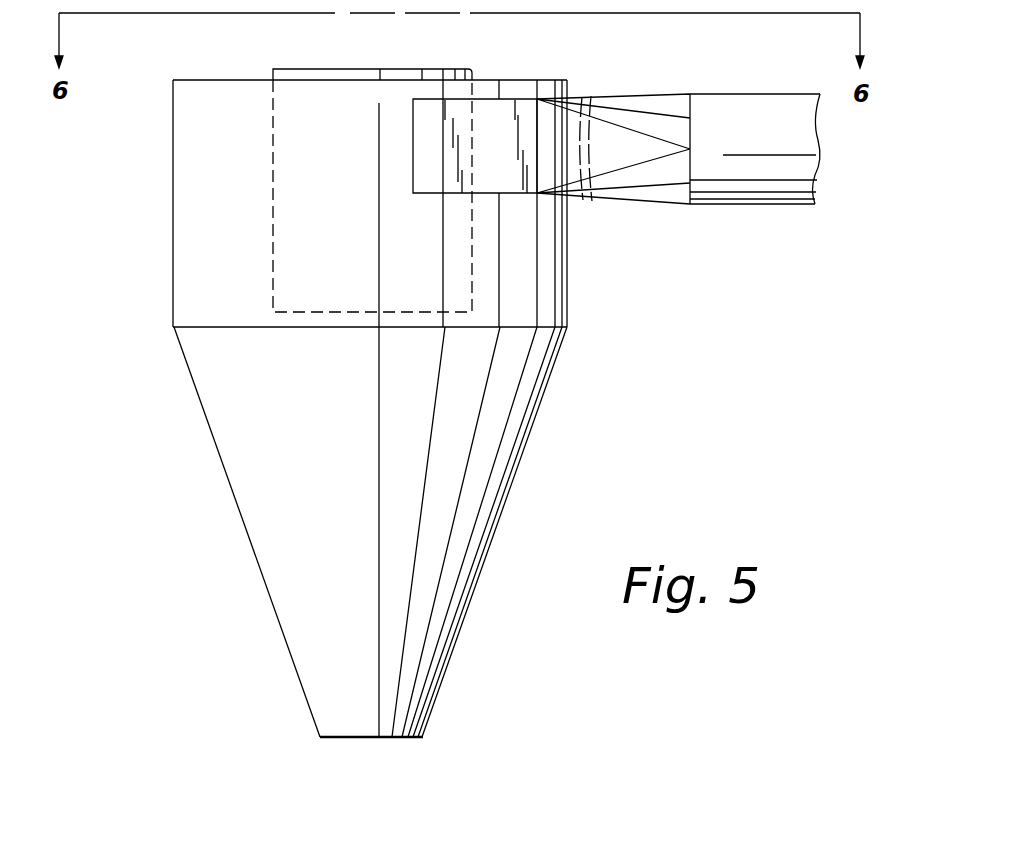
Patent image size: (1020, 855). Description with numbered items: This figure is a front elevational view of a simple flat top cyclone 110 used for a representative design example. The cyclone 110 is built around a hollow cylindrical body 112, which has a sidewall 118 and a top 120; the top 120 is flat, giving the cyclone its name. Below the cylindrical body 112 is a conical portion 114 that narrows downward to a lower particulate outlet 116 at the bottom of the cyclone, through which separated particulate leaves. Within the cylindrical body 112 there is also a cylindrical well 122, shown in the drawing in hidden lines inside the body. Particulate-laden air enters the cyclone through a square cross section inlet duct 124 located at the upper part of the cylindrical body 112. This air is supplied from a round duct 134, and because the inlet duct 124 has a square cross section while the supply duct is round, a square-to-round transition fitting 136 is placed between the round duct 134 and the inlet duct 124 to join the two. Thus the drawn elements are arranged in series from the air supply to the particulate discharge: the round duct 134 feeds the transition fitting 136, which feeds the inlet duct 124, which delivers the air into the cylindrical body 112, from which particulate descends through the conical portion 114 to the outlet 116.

The flat top cyclone 110 is at (160, 413).
The hollow cylindrical body 112 is at (568, 295).
The conical portion 114 is at (520, 462).
The lower particulate outlet 116 is at (423, 737).
The sidewall 118 is at (195, 259).
The top 120 is at (247, 79).
The cylindrical well 122 is at (273, 228).
The inlet duct 124 is at (497, 117).
The round duct 134 is at (742, 93).
The square-to-round transition fitting 136 is at (645, 92).